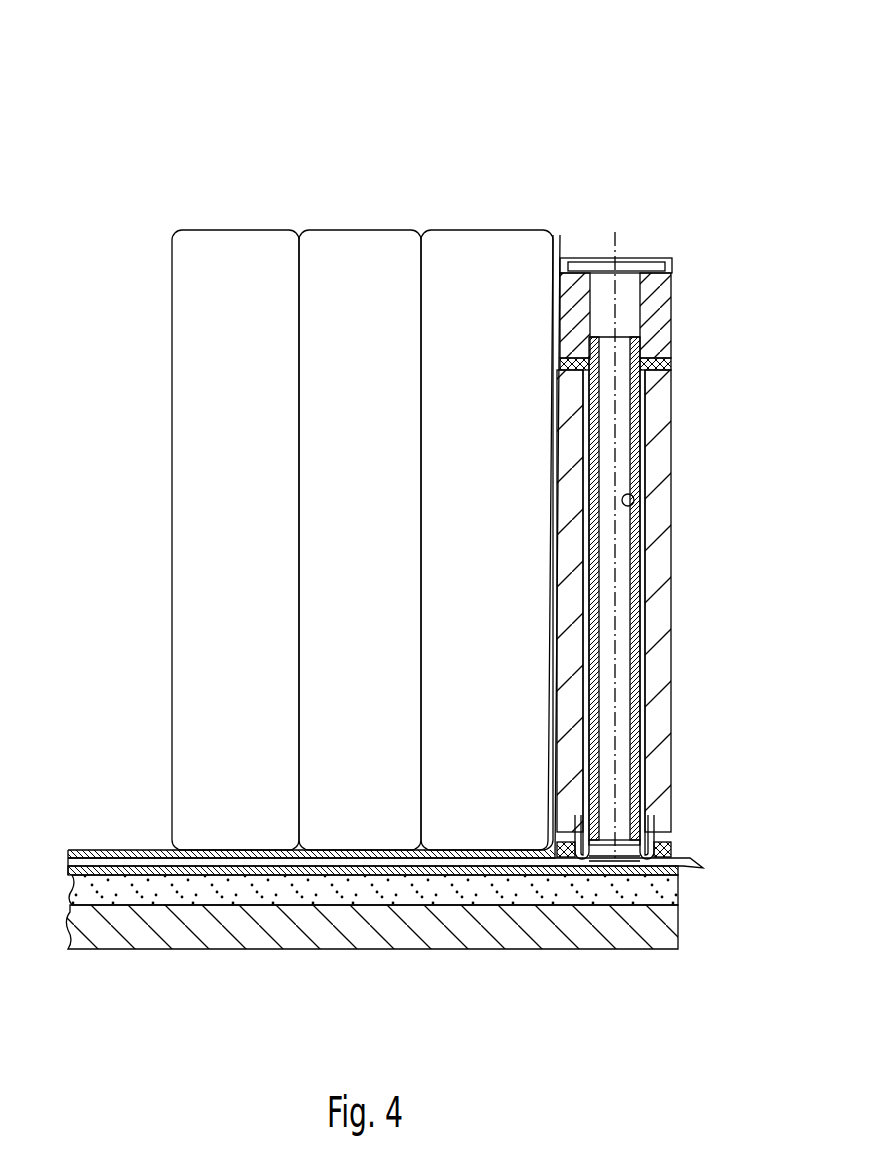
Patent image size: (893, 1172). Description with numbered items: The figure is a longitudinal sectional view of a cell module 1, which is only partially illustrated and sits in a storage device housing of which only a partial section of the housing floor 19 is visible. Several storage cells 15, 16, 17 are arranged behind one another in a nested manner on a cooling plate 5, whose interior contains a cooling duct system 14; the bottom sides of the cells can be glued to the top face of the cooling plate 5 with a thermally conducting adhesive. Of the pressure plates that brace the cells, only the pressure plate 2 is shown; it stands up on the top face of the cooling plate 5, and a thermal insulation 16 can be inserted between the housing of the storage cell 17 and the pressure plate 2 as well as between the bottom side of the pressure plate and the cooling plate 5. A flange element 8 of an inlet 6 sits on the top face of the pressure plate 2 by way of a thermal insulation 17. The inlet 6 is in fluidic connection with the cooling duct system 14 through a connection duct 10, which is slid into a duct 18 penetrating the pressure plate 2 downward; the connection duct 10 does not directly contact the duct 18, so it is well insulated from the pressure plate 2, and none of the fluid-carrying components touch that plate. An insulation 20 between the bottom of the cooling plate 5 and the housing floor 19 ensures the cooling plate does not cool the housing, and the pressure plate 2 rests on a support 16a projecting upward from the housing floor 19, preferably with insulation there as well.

The cell module 1 is at (307, 84).
The pressure plate 2 is at (655, 437).
The cooling plate 5 is at (85, 848).
The inlet 6 is at (626, 283).
The flange element 8 is at (660, 297).
The connection duct 10 is at (640, 566).
The cooling duct system 14 is at (128, 863).
The storage cell 15 is at (262, 250).
The insulating layer 16 is at (367, 250).
The support 16a is at (552, 658).
The storage cell 17 is at (472, 250).
The duct 18 is at (633, 503).
The storage device housing floor 19 is at (221, 930).
The insulation 20 is at (372, 890).